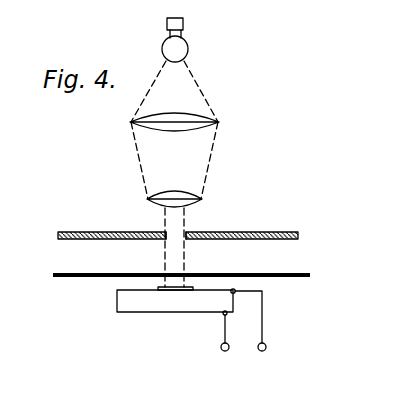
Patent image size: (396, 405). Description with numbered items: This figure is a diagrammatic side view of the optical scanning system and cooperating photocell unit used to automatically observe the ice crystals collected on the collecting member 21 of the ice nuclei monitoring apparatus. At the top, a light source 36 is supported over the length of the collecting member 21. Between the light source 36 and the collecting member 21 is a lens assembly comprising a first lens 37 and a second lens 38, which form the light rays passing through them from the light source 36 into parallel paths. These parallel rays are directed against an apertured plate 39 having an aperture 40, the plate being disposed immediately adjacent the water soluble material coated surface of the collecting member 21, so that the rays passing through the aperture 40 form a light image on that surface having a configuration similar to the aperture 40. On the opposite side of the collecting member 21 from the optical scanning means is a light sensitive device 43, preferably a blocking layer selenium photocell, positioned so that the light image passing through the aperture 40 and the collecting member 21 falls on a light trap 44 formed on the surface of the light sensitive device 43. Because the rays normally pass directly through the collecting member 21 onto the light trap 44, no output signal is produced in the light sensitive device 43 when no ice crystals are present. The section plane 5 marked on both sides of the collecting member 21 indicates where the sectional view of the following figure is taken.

The light source 36 is at (187, 56).
The first lens 37 is at (220, 122).
The second lens 38 is at (204, 199).
The apertured plate 39 is at (293, 231).
The aperture 40 is at (167, 232).
The collecting member 21 is at (297, 278).
The light sensitive device 43 is at (150, 302).
The light trap 44 is at (160, 288).
The plane 5— 5 is at (44, 272).